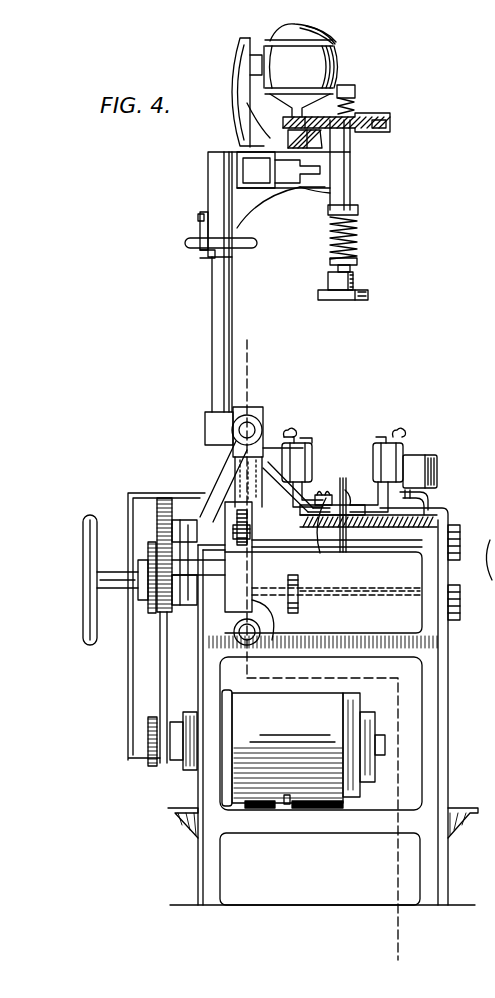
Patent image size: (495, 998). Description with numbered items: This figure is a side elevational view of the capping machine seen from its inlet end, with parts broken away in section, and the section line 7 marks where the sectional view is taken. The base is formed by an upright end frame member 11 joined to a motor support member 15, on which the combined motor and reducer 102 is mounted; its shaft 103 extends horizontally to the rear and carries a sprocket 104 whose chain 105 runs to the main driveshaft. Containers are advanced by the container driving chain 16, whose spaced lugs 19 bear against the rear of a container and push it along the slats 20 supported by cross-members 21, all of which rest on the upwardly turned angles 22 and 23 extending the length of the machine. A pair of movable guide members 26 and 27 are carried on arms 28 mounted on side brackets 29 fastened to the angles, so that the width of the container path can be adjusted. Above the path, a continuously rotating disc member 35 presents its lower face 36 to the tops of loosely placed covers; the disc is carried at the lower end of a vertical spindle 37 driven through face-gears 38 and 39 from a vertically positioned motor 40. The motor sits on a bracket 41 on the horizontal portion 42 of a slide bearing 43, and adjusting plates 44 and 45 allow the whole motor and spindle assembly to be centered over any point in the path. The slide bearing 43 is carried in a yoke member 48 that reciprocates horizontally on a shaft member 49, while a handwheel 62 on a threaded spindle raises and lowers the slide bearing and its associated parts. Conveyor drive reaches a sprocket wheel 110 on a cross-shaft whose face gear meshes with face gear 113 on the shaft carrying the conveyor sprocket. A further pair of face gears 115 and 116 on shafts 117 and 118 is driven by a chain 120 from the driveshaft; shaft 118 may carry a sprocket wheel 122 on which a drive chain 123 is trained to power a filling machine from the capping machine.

The section line 7- 7 is at (226, 343).
The upright end frame member 11 is at (436, 678).
The motor support member 15 is at (256, 808).
The container driving chain 16 is at (346, 550).
The spaced lugs 19 is at (349, 490).
The slats 20 is at (324, 500).
The cross-members 21 is at (327, 536).
The upwardly turned angle 22 is at (300, 502).
The upwardly turned angle 23 is at (388, 513).
The movable guide member 26 is at (314, 449).
The movable guide member 27 is at (362, 452).
The arms 28 is at (294, 436).
The side brackets 29 is at (285, 472).
The disc member 35 is at (356, 284).
The lower face 36 is at (340, 300).
The vertical spindle 37 is at (350, 264).
The face-gear 38 is at (283, 117).
The face-gear 39 is at (375, 133).
The vertically positioned motor 40 is at (326, 62).
The bracket 41 is at (238, 71).
The horizontal portion 42 is at (260, 184).
The slide bearing 43 is at (208, 178).
The adjusting plate 44 is at (302, 166).
The adjusting plate 45 is at (320, 192).
The yoke member 48 is at (255, 410).
The shaft member 49 is at (240, 430).
The handwheel 62 is at (185, 243).
The combined motor and reducer 102 is at (312, 796).
The shaft 103 is at (172, 765).
The sprocket 104 is at (158, 767).
The chain 105 is at (163, 678).
The sprocket wheel 110 is at (492, 494).
The face gear 113 is at (485, 492).
The face gear 115 is at (157, 607).
The face gear 116 is at (160, 507).
The shaft 117 is at (362, 598).
The shaft 118 is at (268, 548).
The chain 120 is at (292, 613).
The sprocket wheel 122 is at (240, 525).
The drive chain 123 is at (242, 540).